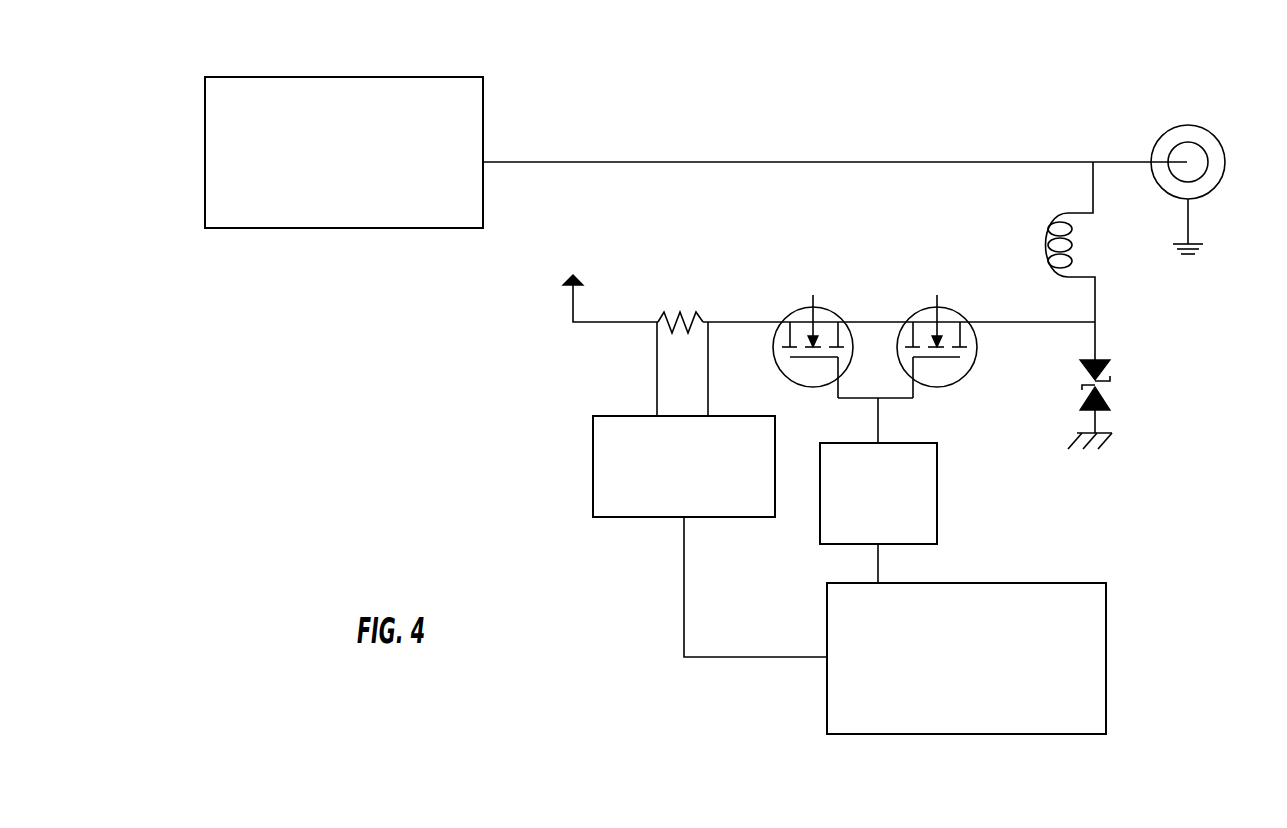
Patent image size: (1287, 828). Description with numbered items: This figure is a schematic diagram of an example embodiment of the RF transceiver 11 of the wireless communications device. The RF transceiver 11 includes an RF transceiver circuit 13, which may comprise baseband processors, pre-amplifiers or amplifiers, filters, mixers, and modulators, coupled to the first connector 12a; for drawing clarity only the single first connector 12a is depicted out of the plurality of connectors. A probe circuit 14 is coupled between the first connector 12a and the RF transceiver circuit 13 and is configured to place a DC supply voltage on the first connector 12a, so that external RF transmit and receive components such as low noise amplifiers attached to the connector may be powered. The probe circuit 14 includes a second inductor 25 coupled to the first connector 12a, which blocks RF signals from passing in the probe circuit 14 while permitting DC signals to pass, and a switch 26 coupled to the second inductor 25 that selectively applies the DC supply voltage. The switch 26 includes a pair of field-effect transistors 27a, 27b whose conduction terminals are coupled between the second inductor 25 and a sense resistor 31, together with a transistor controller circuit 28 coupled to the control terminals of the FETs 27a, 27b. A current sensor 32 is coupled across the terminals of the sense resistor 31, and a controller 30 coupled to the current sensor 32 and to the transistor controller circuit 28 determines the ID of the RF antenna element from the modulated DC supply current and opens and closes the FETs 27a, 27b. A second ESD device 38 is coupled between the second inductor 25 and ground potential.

The RF transceiver 11 is at (1118, 92).
The first connector 12a is at (1188, 162).
The RF transceiver circuit 13 is at (363, 190).
The probe circuit 14 is at (869, 138).
The second inductor 25 is at (1050, 232).
The switch 26 is at (873, 294).
The field-effect transistor 27a is at (803, 356).
The field-effect transistor 27b is at (947, 356).
The transistor controller circuit 28 is at (937, 497).
The controller 30 is at (982, 683).
The sense resistor 31 is at (688, 319).
The current sensor 32 is at (593, 470).
The second ESD device 38 is at (1104, 368).